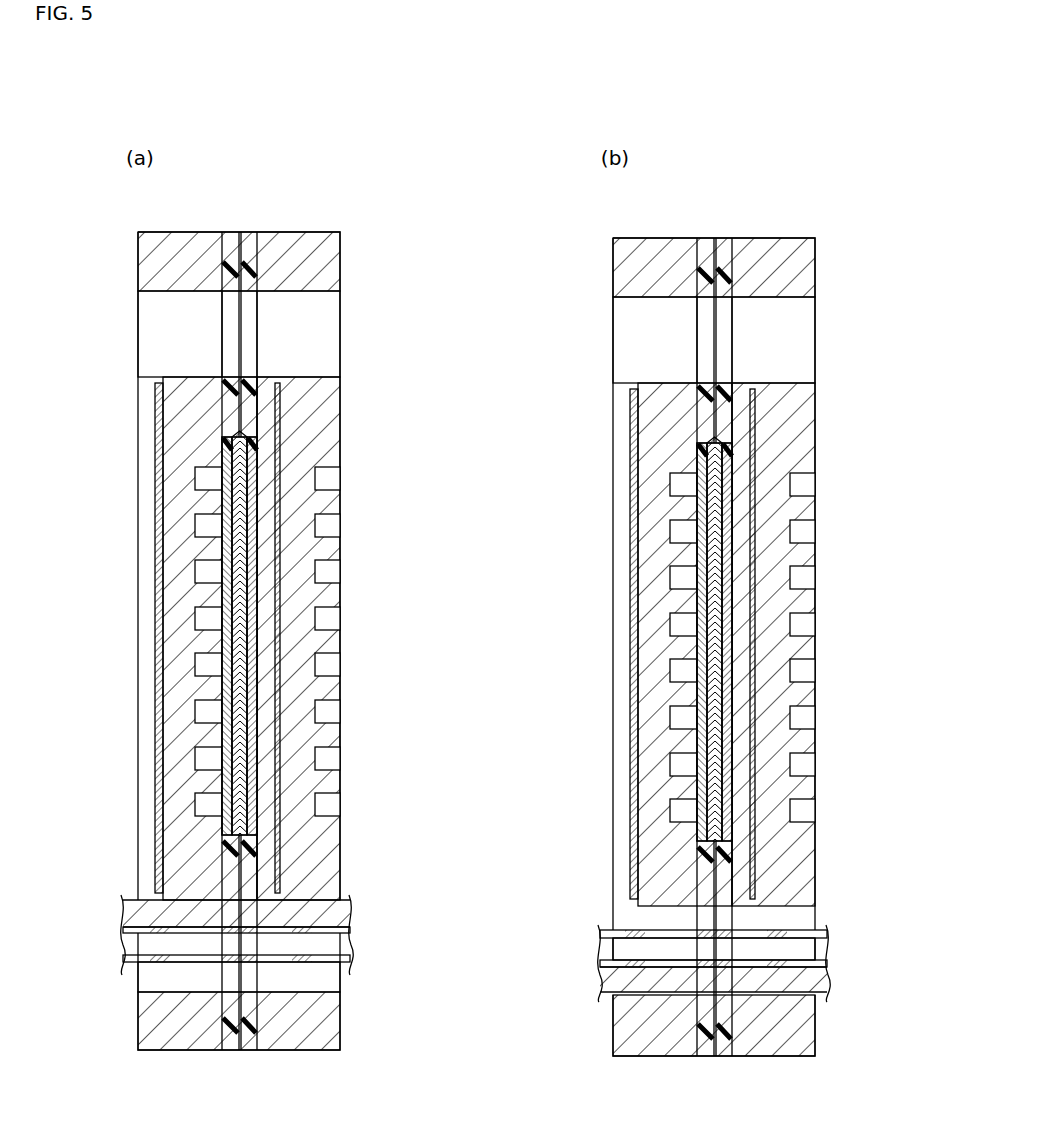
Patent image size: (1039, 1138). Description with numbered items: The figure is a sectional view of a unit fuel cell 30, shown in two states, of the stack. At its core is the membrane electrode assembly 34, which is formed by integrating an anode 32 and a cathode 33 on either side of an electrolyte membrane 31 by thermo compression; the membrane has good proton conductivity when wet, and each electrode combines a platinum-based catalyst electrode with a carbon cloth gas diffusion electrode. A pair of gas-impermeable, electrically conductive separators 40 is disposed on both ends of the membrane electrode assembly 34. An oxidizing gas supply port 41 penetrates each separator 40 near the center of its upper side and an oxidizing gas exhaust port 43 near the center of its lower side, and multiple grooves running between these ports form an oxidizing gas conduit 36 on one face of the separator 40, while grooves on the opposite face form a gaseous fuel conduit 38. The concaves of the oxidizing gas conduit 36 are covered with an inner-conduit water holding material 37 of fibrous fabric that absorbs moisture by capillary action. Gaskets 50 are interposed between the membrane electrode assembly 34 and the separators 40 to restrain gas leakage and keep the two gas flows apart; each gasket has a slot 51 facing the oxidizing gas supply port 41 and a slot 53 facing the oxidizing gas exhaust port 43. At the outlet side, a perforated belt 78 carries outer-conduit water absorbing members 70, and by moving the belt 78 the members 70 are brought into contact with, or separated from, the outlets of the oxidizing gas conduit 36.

The unit fuel cell 30 is at (331, 203).
The electrolyte membrane 31 is at (238, 545).
The anode 32 is at (232, 500).
The cathode 33 is at (245, 595).
The membrane electrode assembly 34 is at (80, 478).
The oxidizing gas conduit 36 is at (268, 548).
The inner-conduit water holding material 37 is at (290, 598).
The gaseous fuel conduit 38 is at (210, 757).
The separator 40 is at (152, 252).
The oxidizing gas supply port 41 is at (163, 310).
The oxidizing gas exhaust port 43 is at (158, 985).
The gasket 50 is at (230, 248).
The slot 51 is at (230, 334).
The slot 53 is at (228, 975).
The outer-conduit water absorbing member 70 is at (333, 918).
The belt 78 is at (298, 935).